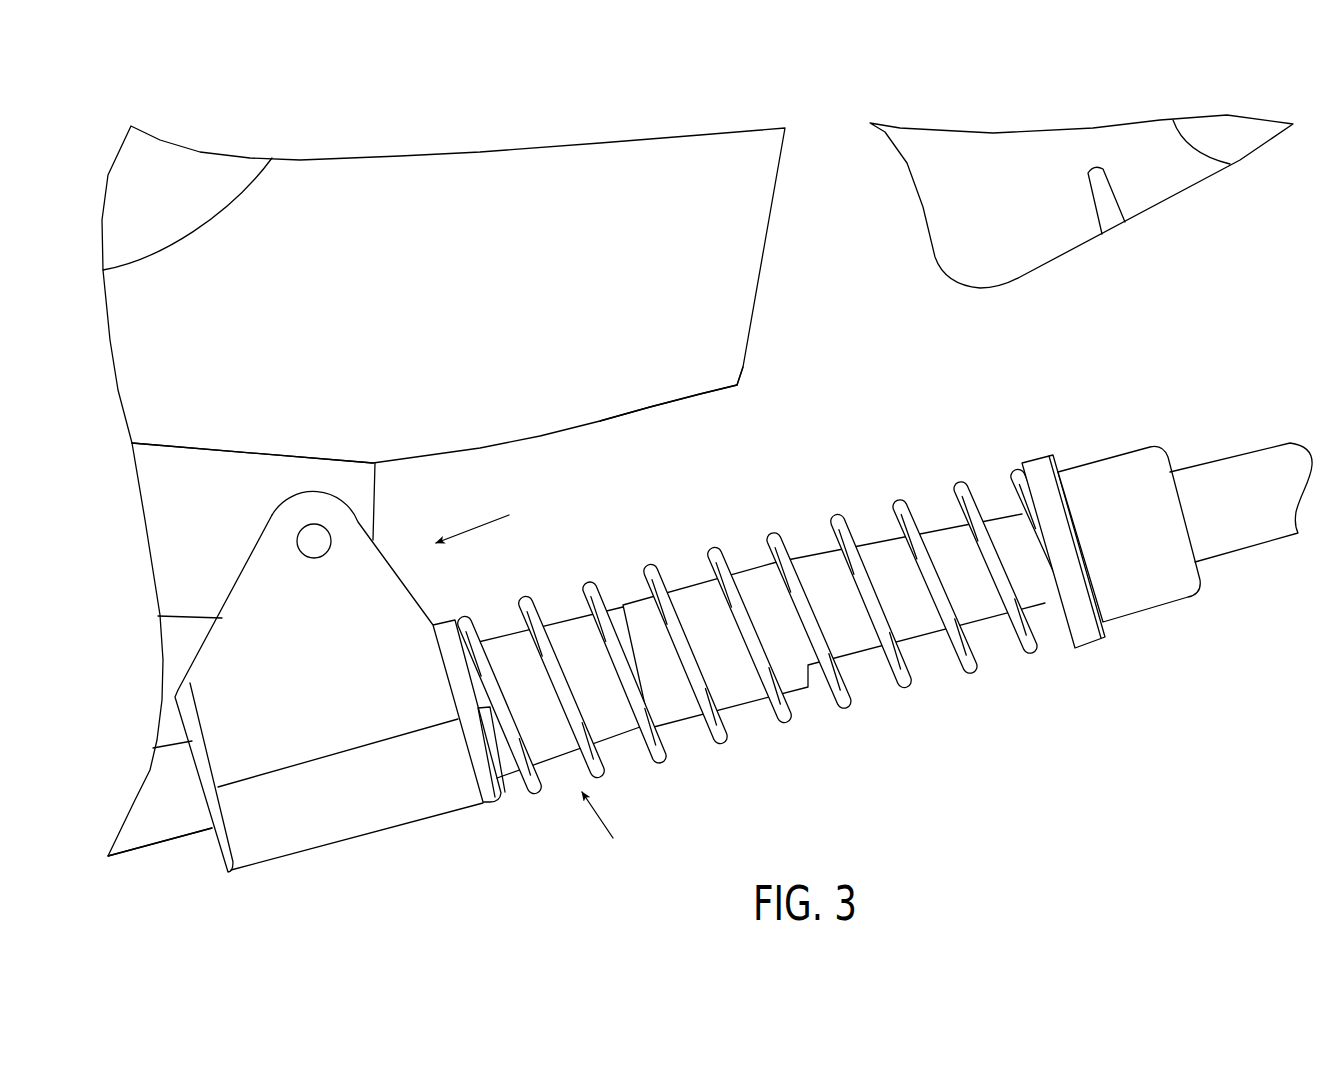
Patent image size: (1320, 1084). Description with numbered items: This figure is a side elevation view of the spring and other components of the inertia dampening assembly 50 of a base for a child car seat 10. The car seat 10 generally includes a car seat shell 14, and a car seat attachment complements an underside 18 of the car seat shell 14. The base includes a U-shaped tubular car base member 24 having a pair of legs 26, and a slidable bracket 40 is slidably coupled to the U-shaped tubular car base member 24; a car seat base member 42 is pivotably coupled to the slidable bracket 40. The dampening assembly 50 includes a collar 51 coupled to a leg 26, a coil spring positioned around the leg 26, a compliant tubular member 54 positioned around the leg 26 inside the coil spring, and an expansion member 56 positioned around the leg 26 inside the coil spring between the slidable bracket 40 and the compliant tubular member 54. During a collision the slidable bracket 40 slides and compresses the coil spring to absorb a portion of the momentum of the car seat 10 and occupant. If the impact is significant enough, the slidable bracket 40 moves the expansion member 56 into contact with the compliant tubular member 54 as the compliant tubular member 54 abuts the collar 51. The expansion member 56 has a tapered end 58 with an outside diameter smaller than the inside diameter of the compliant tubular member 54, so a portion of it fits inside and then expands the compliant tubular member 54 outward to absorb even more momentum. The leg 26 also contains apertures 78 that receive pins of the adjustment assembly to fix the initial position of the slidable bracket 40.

The child car seat 10 is at (496, 286).
The car seat shell 14 is at (643, 373).
The underside 18 is at (740, 390).
The U-shaped tubular car base member 24 is at (187, 855).
The legs 26 is at (1238, 579).
The slidable bracket 40 is at (300, 680).
The car seat base member 42 is at (248, 467).
The inertia dampening assembly 50 is at (895, 365).
The collar 51 is at (1111, 655).
The compliant tubular member 54 is at (746, 715).
The expansion member 56 is at (970, 470).
The tapered end 58 is at (633, 746).
The apertures 78 is at (1258, 520).